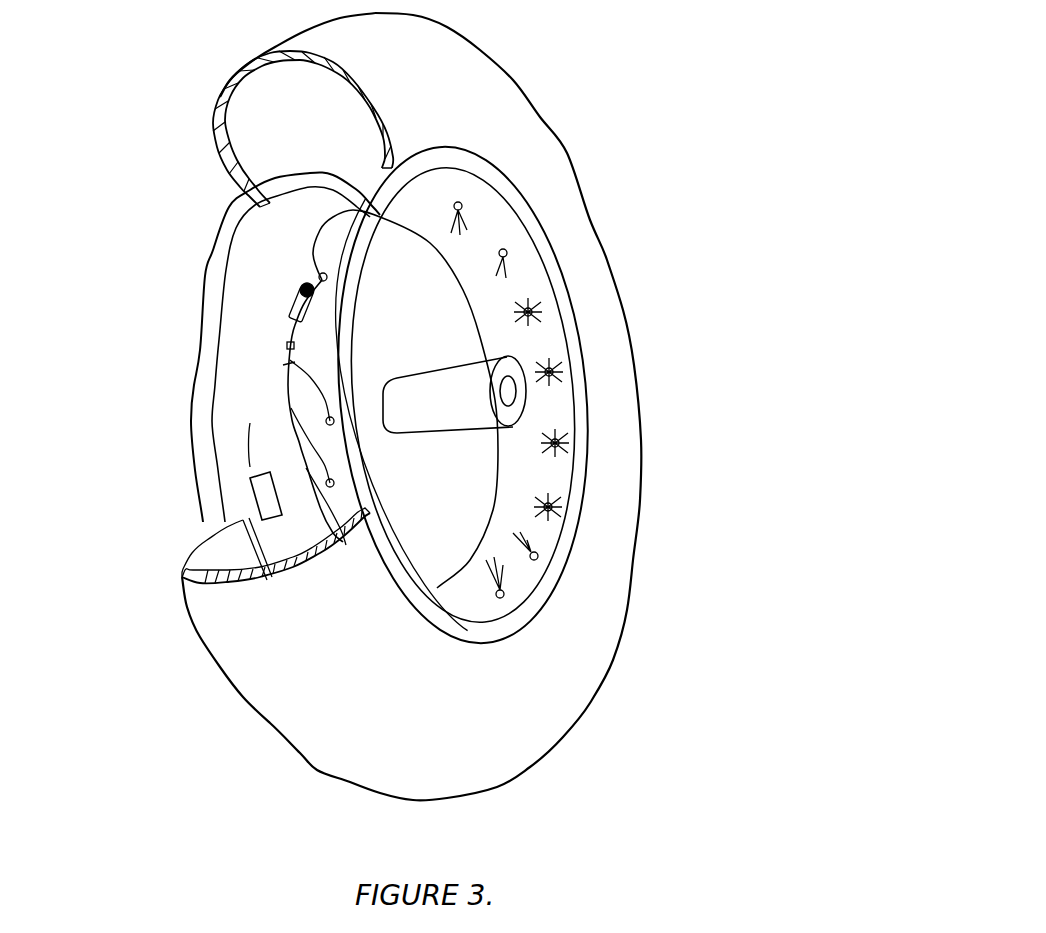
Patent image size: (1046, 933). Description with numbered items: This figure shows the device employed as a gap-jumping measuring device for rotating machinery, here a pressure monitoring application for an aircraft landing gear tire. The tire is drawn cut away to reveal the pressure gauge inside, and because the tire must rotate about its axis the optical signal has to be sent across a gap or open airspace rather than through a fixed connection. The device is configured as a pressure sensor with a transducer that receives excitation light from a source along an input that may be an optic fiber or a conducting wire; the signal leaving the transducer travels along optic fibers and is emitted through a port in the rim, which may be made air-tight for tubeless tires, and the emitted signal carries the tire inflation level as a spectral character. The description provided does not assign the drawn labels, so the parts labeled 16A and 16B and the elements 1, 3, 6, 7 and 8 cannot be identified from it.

The circuit module 1 is at (250, 497).
The light source lamp 3 is at (290, 300).
The sensor element 6 is at (285, 343).
The reflector wall 7 is at (247, 423).
The lens element 8 is at (283, 365).
The upper housing section 16A is at (190, 413).
The lower housing section 16B is at (253, 710).